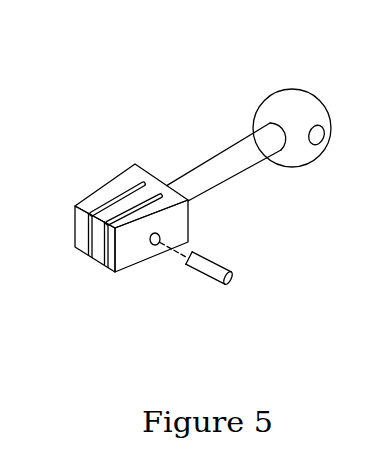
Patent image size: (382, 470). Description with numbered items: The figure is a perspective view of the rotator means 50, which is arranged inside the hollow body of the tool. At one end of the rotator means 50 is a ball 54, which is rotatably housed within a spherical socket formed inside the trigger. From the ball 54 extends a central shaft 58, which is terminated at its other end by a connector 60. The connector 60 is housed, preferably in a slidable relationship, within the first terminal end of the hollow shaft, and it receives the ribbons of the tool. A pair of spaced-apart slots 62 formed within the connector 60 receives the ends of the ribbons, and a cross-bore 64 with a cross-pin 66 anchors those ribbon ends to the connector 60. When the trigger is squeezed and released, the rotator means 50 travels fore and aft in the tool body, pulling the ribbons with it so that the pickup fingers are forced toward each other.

The rotator means 50 is at (172, 103).
The ball 54 is at (288, 103).
The central shaft 58 is at (233, 172).
The connector 60 is at (117, 180).
The spaced-apart slots 62 is at (96, 234).
The cross-bore 64 is at (160, 245).
The cross-pin 66 is at (215, 268).